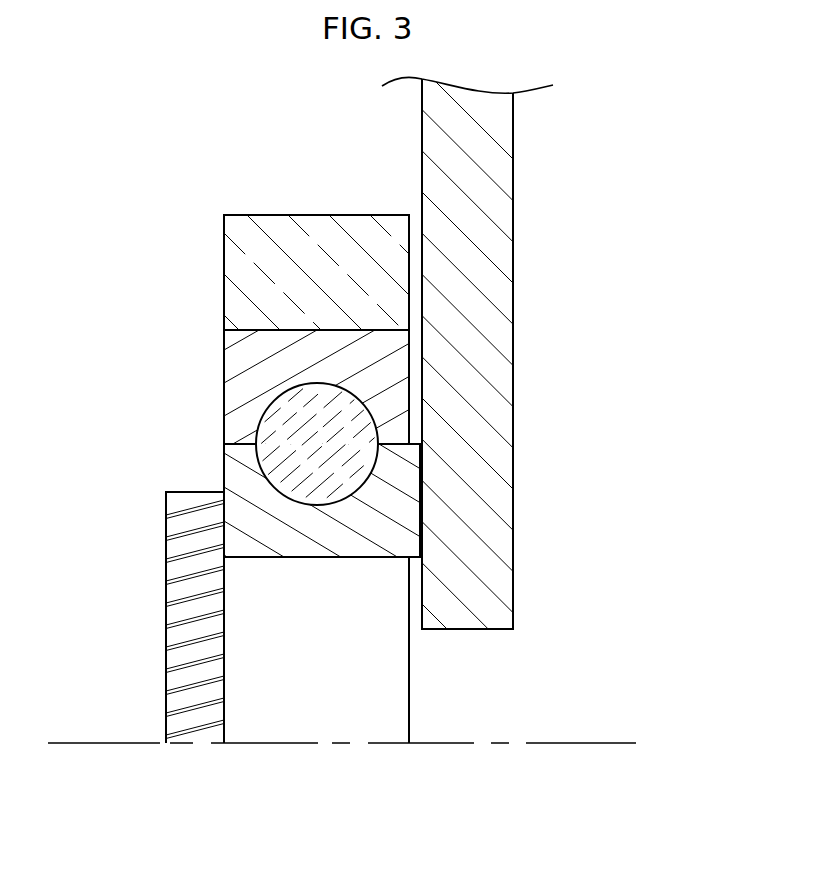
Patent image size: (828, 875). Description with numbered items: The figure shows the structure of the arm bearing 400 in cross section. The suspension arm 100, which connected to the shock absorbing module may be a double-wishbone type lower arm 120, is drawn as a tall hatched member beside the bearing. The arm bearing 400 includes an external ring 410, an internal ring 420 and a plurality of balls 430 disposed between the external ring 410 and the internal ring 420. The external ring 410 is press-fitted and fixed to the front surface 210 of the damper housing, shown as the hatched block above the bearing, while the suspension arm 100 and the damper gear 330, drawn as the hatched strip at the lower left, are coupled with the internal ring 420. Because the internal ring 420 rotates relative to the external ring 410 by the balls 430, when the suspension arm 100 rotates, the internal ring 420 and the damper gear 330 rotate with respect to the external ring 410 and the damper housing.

The suspension arm 100 is at (536, 353).
The lower arm 120 is at (497, 251).
The front surface 210 is at (243, 276).
The damper gear 330 is at (187, 653).
The arm bearing 400 is at (363, 443).
The external ring 410 is at (228, 372).
The internal ring 420 is at (357, 516).
The balls 430 is at (333, 444).